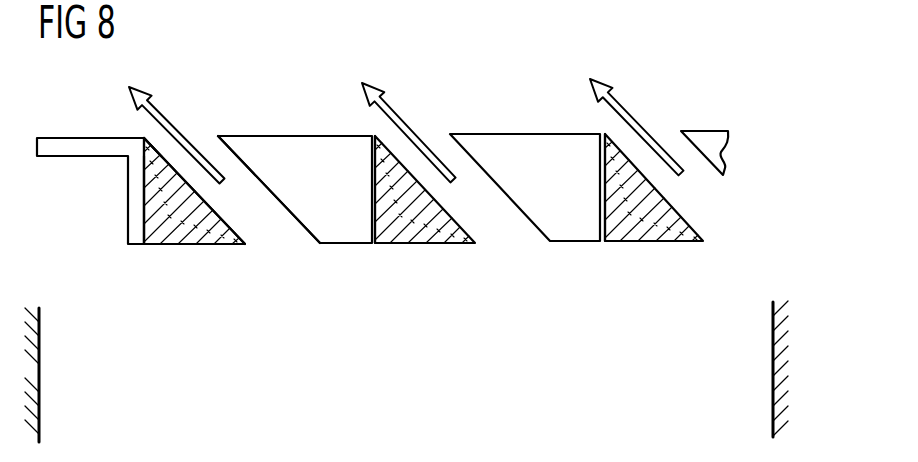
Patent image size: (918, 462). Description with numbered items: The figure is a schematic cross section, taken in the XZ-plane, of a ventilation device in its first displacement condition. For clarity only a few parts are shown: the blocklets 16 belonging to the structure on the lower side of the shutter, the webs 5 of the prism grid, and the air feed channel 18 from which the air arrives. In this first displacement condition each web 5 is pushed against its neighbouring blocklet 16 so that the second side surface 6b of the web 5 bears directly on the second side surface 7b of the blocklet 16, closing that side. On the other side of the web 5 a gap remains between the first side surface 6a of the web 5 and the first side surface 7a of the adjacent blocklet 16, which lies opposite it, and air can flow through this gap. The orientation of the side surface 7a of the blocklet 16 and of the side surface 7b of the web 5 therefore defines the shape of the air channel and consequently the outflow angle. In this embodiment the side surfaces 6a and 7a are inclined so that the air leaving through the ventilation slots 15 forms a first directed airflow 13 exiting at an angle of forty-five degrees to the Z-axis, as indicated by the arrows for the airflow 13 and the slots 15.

The web 5 is at (177, 247).
The first side surface of the web 6a is at (233, 222).
The second side surface of the web 6b is at (130, 224).
The first side surface of the blocklet 7a is at (237, 165).
The second side surface of the blocklet 7b is at (153, 146).
The first directed airflow 13 is at (628, 107).
The ventilation slot 15 is at (208, 147).
The blocklet 16 is at (58, 148).
The air feed channel 18 is at (39, 381).